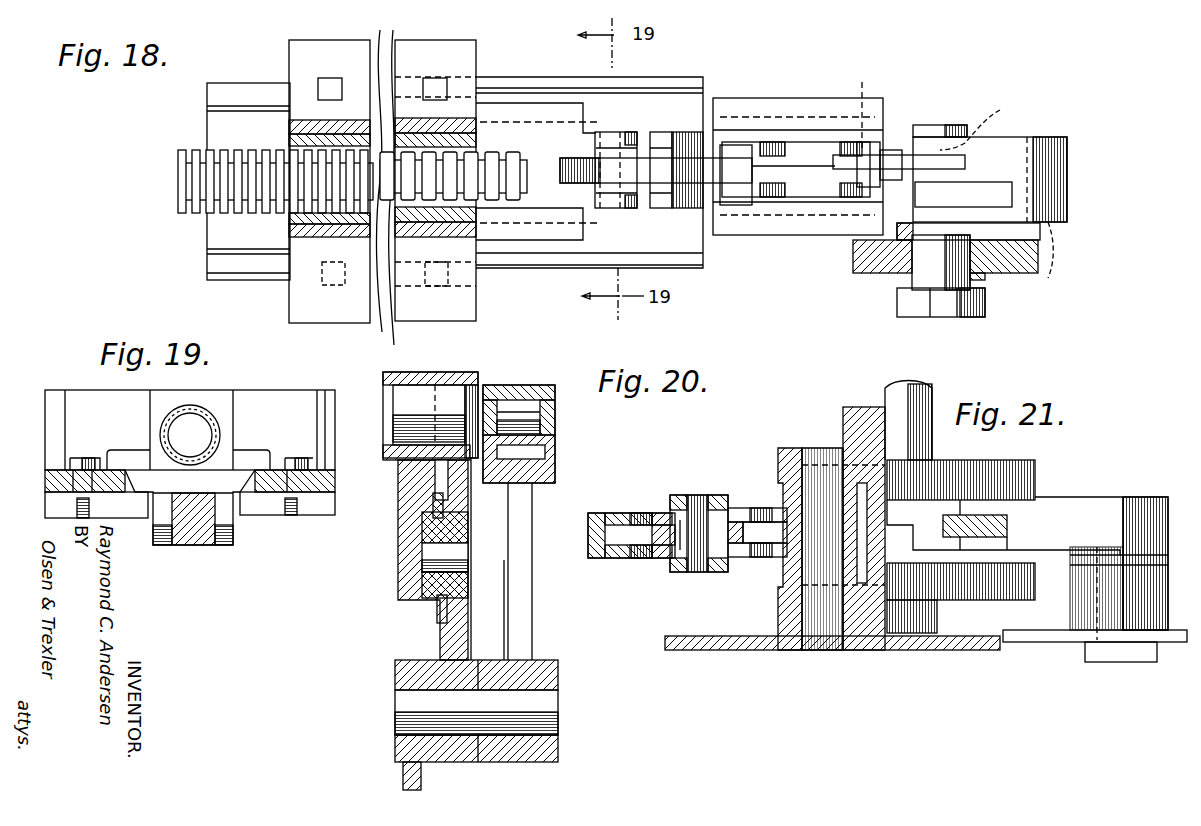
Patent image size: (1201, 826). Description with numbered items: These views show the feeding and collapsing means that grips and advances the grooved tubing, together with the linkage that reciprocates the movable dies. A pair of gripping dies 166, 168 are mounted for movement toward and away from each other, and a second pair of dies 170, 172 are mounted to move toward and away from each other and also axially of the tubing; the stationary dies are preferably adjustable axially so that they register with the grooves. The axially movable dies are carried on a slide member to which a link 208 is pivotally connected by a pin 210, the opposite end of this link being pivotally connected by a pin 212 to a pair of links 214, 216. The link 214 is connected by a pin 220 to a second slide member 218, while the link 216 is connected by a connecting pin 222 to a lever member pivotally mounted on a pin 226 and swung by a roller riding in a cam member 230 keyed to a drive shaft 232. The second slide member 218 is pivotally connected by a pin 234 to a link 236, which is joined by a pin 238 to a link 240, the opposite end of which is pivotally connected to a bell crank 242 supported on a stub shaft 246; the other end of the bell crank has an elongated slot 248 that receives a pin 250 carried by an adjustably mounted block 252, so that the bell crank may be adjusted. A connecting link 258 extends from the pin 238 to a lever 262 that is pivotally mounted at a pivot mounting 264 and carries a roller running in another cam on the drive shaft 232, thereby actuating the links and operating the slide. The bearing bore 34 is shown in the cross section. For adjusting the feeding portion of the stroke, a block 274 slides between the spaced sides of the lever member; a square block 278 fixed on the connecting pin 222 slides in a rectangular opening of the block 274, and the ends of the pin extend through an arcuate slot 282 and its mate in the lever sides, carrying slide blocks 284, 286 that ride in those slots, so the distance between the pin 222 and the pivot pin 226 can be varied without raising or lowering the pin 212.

In FIG. 19, the bearing bore 34 is at (208, 410).
In FIG. 18, the gripping die 166 is at (312, 346).
In FIG. 18, the gripping die 168 is at (326, 29).
In FIG. 18, the die 170 is at (357, 357).
In FIG. 18, the die 172 is at (388, 29).
In FIG. 18, the link 208 is at (645, 186).
In FIG. 19, the link 208 is at (200, 537).
In FIG. 18, the pin 210 is at (608, 132).
In FIG. 19, the pin 210 is at (148, 520).
In FIG. 18, the pin 212 is at (688, 132).
In FIG. 18, the link 214 is at (712, 160).
In FIG. 18, the link 216 is at (657, 132).
In FIG. 21, the link 216 is at (686, 575).
In FIG. 18, the second slide member 218 is at (822, 200).
In FIG. 18, the pin 220 is at (762, 122).
In FIG. 21, the connecting pin 222 is at (695, 502).
In FIG. 21, the pin 226 is at (842, 652).
In FIG. 21, the cam member 230 is at (1022, 600).
In FIG. 21, the drive shaft 232 is at (900, 395).
In FIG. 18, the pin 234 is at (872, 104).
In FIG. 18, the link 236 is at (907, 160).
In FIG. 18, the pin 238 is at (984, 120).
In FIG. 20, the pin 238 is at (558, 420).
In FIG. 18, the link 240 is at (1010, 148).
In FIG. 20, the link 240 is at (524, 385).
In FIG. 18, the bell crank 242 is at (1005, 216).
In FIG. 20, the bell crank 242 is at (462, 512).
In FIG. 18, the stub shaft 246 is at (955, 268).
In FIG. 20, the stub shaft 246 is at (415, 398).
In FIG. 20, the elongated slot 248 is at (438, 552).
In FIG. 20, the pin 250 is at (432, 557).
In FIG. 20, the adjustably mounted block 252 is at (422, 602).
In FIG. 18, the connecting link 258 is at (945, 125).
In FIG. 20, the connecting link 258 is at (525, 637).
In FIG. 21, the connecting link 258 is at (978, 515).
In FIG. 20, the lever 262 is at (555, 751).
In FIG. 21, the lever 262 is at (1045, 519).
In FIG. 20, the pivot mounting 264 is at (550, 700).
In FIG. 21, the block 274 is at (735, 520).
In FIG. 21, the square block 278 is at (665, 545).
In FIG. 21, the arcuate slot 282 is at (606, 560).
In FIG. 21, the slide block 284 is at (676, 522).
In FIG. 21, the slide block 286 is at (680, 556).